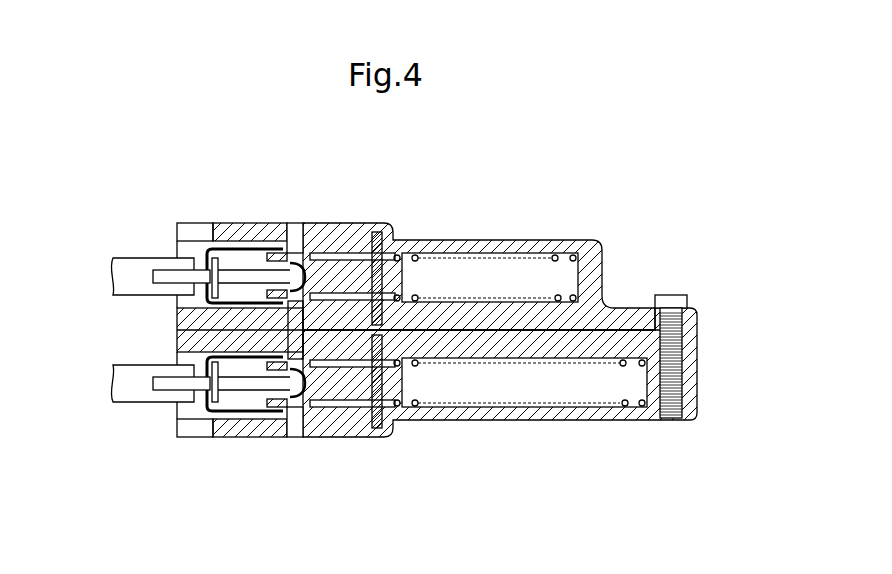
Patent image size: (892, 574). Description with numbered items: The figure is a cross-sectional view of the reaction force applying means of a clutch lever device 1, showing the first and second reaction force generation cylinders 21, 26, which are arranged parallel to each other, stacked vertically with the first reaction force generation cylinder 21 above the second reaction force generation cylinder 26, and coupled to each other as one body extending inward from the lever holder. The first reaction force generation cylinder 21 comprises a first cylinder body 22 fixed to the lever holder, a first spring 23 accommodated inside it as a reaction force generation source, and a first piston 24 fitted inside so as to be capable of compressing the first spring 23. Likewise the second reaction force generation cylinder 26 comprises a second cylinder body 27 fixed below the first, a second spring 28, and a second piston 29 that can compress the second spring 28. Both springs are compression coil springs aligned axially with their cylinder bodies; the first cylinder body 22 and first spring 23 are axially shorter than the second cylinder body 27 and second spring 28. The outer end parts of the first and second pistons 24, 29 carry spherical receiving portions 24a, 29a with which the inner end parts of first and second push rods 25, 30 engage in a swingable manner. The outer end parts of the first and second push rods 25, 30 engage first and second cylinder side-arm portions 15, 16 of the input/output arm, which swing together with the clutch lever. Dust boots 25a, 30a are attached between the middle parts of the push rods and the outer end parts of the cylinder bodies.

The connector device 1 is at (578, 186).
The first cylinder side-arm portion 15 is at (120, 258).
The second cylinder side-arm portion 16 is at (120, 403).
The first reaction force generation cylinder 21 is at (221, 220).
The first cylinder body 22 is at (297, 240).
The first spring 23 is at (505, 252).
The first piston 24 is at (376, 232).
The spherical receiving portion 24a is at (306, 262).
The first push rod 25 is at (168, 270).
The dust boot 25a is at (243, 243).
The second reaction force generation cylinder 26 is at (214, 444).
The second cylinder body 27 is at (318, 432).
The second spring 28 is at (497, 408).
The second piston 29 is at (372, 428).
The spherical receiving portion 29a is at (296, 398).
The second push rod 30 is at (168, 392).
The dust boot 30a is at (240, 412).